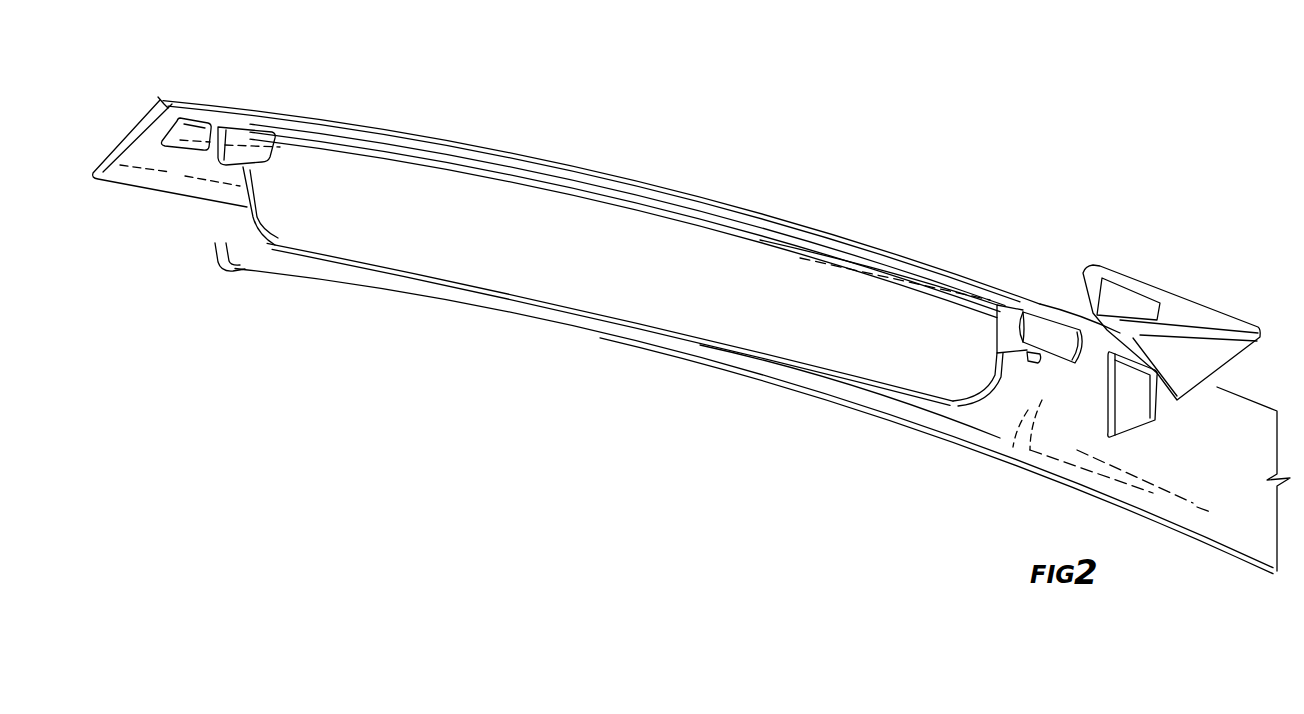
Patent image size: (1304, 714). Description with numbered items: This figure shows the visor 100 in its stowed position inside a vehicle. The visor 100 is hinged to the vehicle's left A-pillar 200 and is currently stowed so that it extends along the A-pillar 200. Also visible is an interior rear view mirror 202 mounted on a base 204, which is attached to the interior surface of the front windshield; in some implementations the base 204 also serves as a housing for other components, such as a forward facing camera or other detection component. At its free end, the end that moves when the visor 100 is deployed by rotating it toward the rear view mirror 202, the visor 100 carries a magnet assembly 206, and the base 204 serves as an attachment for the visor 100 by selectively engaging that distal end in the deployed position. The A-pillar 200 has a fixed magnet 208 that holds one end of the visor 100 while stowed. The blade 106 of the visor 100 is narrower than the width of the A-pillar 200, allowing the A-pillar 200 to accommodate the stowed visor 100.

The visor 100 is at (849, 152).
The blade 106 is at (578, 293).
The A-pillar 200 is at (1243, 517).
The interior rear view mirror 202 is at (1133, 430).
The base 204 is at (1188, 308).
The magnet assembly 206 is at (262, 137).
The fixed magnet 208 is at (199, 121).